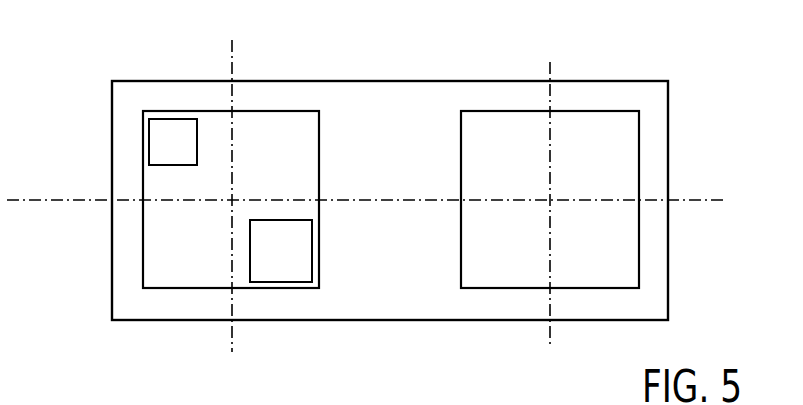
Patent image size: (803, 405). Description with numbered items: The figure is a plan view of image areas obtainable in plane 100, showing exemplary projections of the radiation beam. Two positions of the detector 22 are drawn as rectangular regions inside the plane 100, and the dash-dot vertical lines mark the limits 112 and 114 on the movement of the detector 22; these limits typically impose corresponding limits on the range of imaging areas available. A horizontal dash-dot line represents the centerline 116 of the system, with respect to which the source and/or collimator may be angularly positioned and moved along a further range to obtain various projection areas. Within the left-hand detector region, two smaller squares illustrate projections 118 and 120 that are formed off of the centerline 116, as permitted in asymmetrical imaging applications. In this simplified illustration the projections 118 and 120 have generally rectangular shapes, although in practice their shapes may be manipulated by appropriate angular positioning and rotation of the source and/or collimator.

The plane 100 is at (372, 92).
The detector 22 is at (157, 288).
The projection 118 is at (149, 142).
The projection 120 is at (280, 282).
The centerline 116 is at (62, 203).
The limit 112 is at (230, 335).
The limit 114 is at (552, 335).